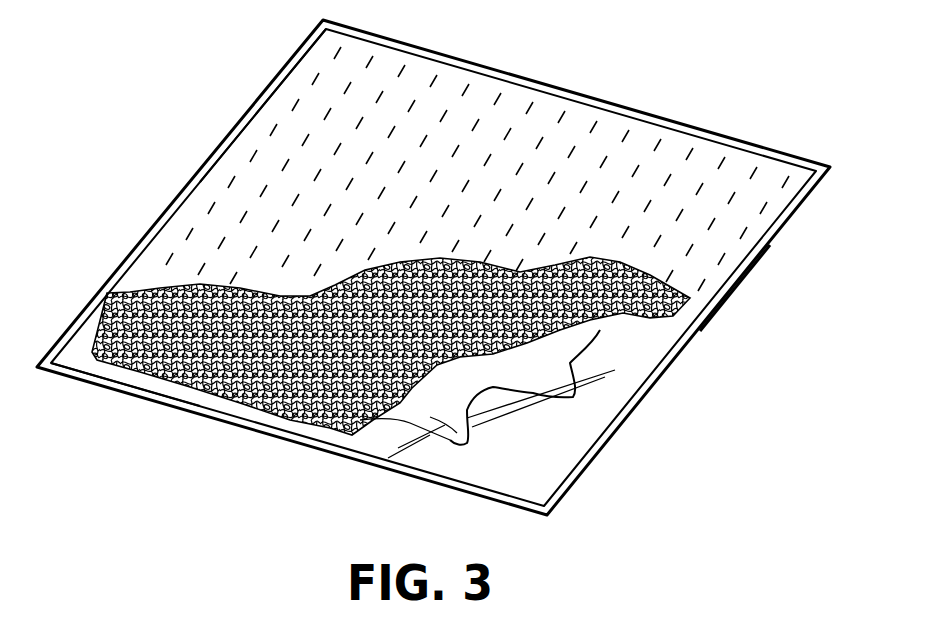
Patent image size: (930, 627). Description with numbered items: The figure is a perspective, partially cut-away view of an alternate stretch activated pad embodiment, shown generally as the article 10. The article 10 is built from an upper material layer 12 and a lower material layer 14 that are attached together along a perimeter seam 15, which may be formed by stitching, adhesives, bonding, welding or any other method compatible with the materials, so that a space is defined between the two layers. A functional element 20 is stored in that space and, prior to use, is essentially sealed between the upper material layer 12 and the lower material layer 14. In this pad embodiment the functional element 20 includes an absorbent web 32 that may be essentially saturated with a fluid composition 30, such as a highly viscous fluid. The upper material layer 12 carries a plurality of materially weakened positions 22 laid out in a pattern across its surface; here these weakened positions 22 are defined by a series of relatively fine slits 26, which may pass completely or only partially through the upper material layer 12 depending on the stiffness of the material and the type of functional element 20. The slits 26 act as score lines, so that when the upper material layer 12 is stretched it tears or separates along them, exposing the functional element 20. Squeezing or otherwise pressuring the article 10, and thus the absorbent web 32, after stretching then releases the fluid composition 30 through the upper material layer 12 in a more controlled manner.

The article 10 is at (152, 118).
The upper material layer 12 is at (510, 98).
The lower material layer 14 is at (557, 473).
The perimeter seam 15 is at (740, 279).
The functional element 20 is at (140, 386).
The weakened positions 22 is at (302, 68).
The slits 26 is at (578, 153).
The fluid composition 30 is at (461, 440).
The absorbent web 32 is at (637, 322).